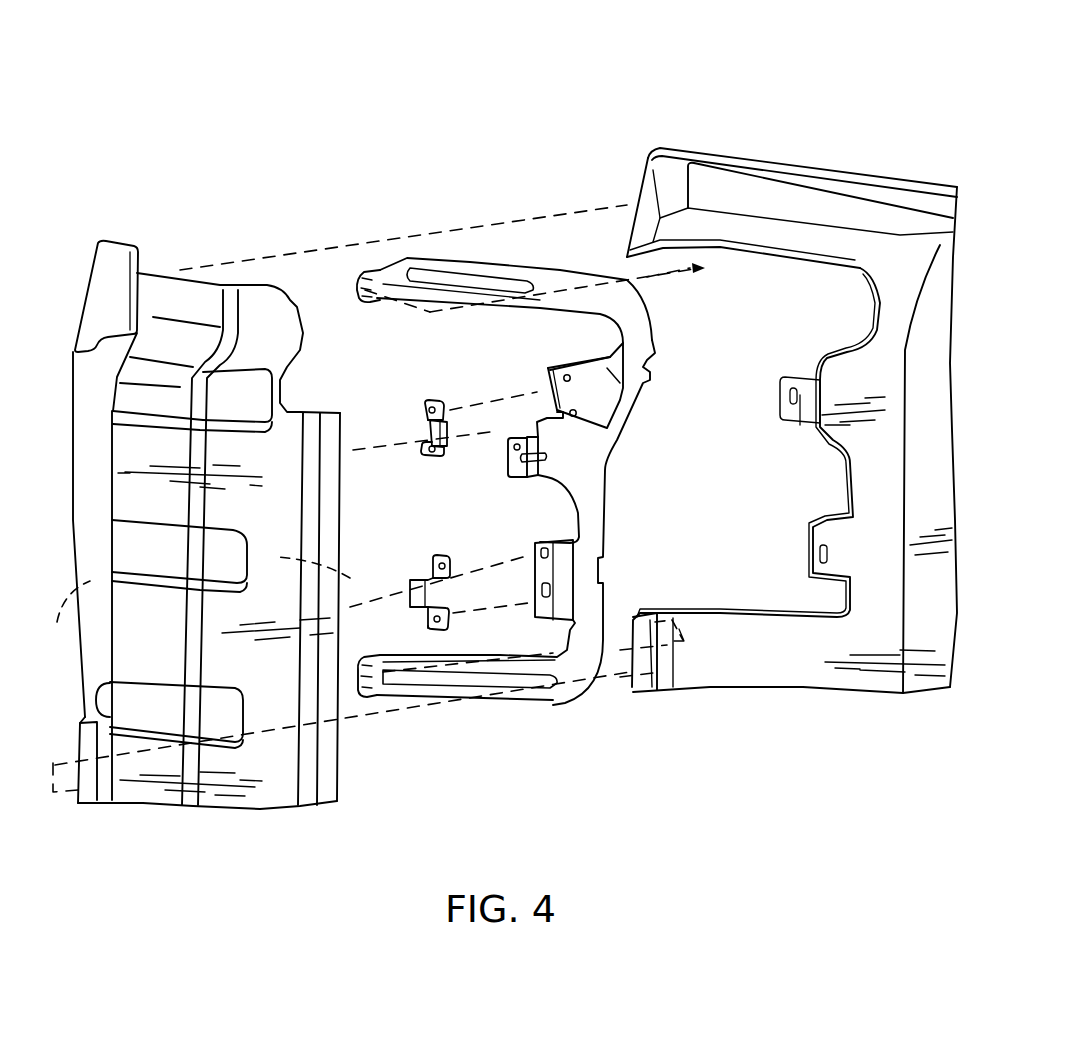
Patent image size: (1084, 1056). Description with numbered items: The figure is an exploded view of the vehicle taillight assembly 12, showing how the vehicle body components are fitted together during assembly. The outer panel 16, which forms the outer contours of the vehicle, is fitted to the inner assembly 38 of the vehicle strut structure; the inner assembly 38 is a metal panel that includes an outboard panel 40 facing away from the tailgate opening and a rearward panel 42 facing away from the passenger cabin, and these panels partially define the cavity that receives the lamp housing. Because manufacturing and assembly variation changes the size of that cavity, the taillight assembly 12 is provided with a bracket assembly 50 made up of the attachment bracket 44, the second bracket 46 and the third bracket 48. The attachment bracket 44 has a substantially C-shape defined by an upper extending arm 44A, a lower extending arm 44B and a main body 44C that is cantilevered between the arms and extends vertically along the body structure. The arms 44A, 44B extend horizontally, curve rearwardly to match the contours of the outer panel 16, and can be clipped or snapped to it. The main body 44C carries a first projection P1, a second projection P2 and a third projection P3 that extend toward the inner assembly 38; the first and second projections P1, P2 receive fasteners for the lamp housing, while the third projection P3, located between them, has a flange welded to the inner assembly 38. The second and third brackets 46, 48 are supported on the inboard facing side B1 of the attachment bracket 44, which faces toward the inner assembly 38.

The vehicle taillight assembly 12 is at (630, 57).
The outer panel 16 is at (805, 176).
The inner assembly 38 is at (195, 222).
The outboard panel 40 is at (66, 617).
The rearward panel 42 is at (340, 578).
The attachment bracket 44 is at (542, 498).
The upper extending arm 44A is at (520, 265).
The lower extending arm 44B is at (473, 699).
The main body 44C is at (577, 456).
The second bracket 46 is at (437, 400).
The third bracket 48 is at (432, 566).
The bracket assembly 50 is at (425, 202).
The first projection P1 is at (545, 382).
The second projection P2 is at (547, 611).
The third projection P3 is at (517, 480).
The inboard facing side B1 is at (592, 503).